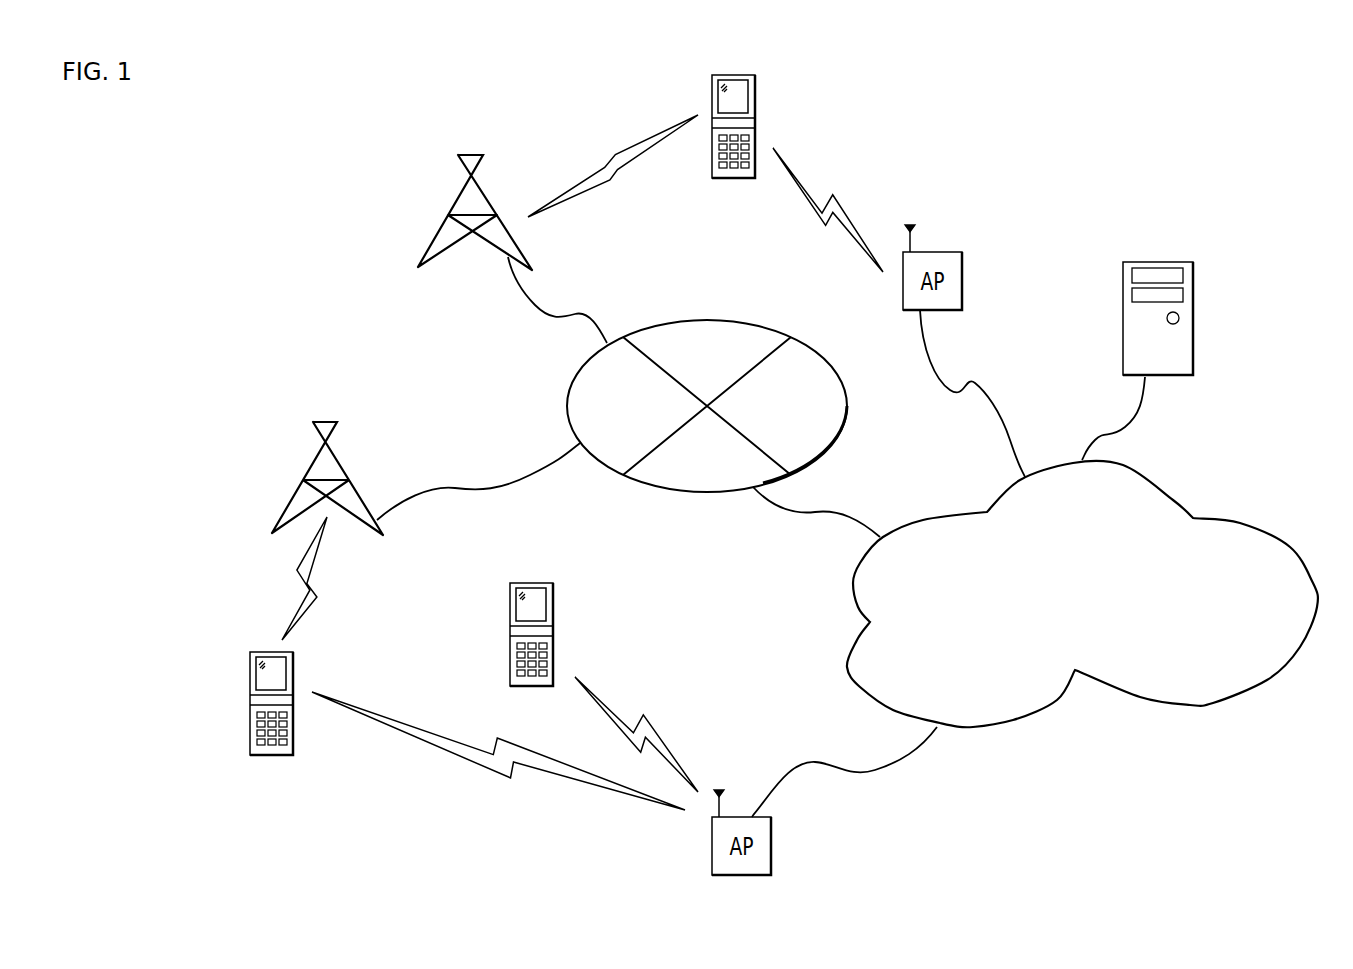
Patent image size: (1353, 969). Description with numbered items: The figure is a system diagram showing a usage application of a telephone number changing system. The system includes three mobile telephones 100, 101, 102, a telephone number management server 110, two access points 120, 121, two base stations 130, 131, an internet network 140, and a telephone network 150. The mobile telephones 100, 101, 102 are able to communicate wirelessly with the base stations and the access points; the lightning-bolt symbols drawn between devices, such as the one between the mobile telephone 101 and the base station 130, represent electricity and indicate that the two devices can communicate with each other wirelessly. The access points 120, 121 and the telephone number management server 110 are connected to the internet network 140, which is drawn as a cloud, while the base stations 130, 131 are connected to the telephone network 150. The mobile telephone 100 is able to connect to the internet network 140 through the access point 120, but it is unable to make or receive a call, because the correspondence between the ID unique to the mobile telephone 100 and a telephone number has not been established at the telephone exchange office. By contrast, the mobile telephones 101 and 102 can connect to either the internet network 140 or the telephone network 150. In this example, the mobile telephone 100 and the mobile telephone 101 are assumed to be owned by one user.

The mobile telephone 100 is at (557, 652).
The mobile telephone 101 is at (250, 692).
The mobile telephone 102 is at (755, 110).
The telephone number management server 110 is at (1197, 298).
The access point 120 is at (770, 845).
The access point 121 is at (935, 252).
The base station 130 is at (322, 422).
The base station 131 is at (462, 153).
The internet network 140 is at (1002, 727).
The telephone network 150 is at (688, 318).